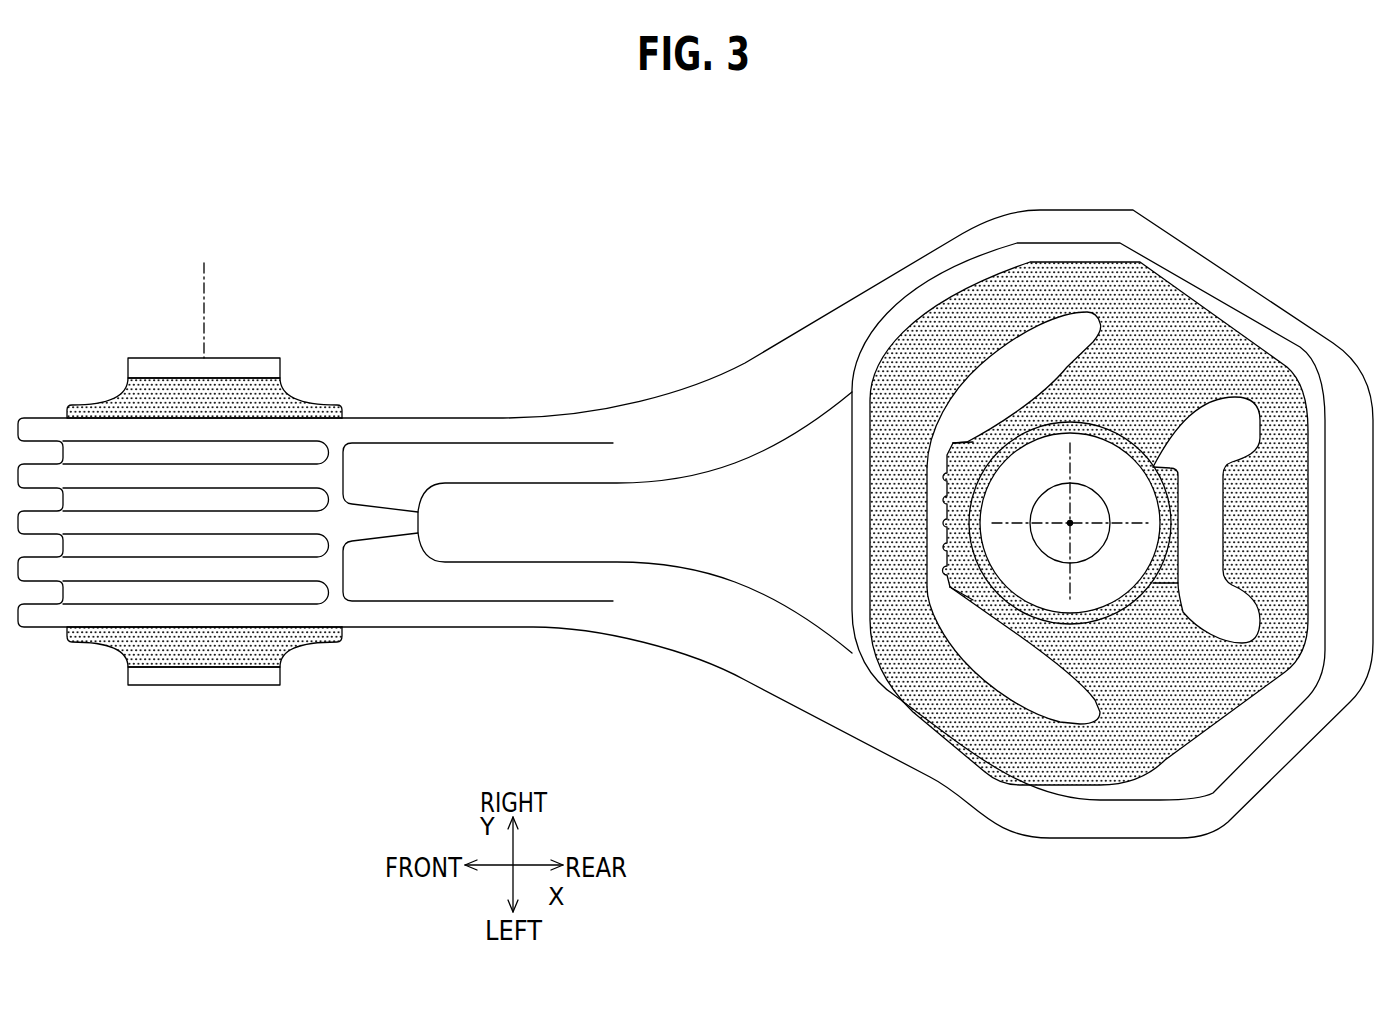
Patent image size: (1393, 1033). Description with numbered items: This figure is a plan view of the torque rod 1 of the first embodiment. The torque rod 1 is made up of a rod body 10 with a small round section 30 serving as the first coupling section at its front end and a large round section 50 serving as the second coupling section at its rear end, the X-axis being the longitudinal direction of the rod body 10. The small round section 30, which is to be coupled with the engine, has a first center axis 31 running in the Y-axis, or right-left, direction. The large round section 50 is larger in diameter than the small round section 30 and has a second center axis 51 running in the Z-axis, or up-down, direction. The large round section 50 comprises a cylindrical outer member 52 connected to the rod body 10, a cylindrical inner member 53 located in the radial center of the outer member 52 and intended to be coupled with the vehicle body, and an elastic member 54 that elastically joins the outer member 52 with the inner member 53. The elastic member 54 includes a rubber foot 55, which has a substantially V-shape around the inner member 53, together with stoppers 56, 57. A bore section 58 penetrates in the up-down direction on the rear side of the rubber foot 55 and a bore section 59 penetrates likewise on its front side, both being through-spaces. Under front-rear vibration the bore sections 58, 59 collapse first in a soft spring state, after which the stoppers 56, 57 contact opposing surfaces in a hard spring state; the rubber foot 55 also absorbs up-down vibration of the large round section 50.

The torque rod 1 is at (145, 215).
The rod body 10 is at (503, 418).
The small round section 30 is at (92, 333).
The first center axis 31 is at (205, 282).
The large round section 50 is at (955, 162).
The second center axis 51 is at (1067, 530).
The outer member 52 is at (988, 233).
The inner member 53 is at (1022, 462).
The elastic member 54 is at (903, 397).
The rubber foot 55 is at (1073, 367).
The stopper 56 is at (1153, 583).
The stopper 57 is at (950, 587).
The bore section 58 is at (1233, 617).
The bore section 59 is at (987, 648).